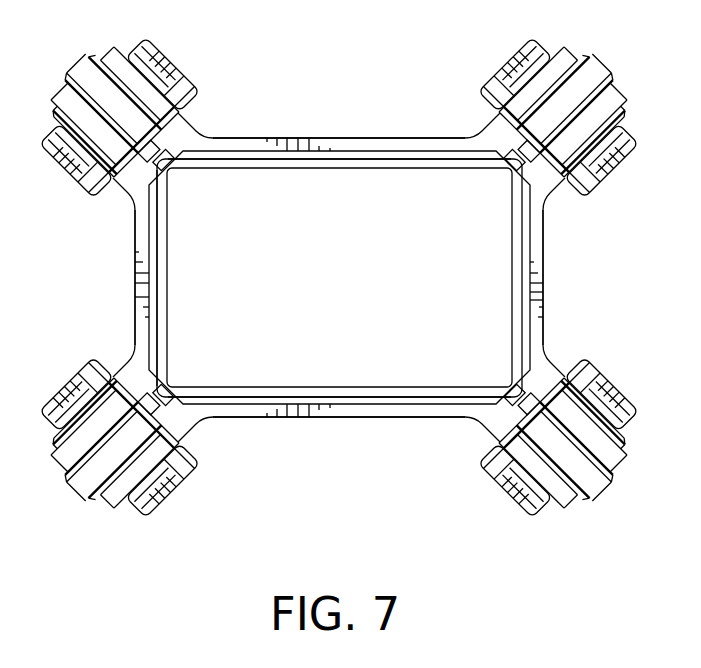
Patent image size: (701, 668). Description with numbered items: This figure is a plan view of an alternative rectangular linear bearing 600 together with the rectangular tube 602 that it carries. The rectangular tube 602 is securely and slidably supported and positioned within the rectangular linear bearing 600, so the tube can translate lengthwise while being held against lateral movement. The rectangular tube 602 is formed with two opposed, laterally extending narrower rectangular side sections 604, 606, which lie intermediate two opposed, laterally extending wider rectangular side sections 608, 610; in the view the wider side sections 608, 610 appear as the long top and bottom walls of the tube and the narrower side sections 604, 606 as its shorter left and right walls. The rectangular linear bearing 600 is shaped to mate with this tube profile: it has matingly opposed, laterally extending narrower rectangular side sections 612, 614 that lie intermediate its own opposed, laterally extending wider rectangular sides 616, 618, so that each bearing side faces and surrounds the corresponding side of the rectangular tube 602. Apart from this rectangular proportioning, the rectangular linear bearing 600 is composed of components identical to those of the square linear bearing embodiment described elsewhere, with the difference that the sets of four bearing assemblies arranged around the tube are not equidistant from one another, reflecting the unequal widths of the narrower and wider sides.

The rectangular linear bearing 600 is at (543, 327).
The rectangular tube 602 is at (522, 296).
The narrower rectangular side section 604 is at (525, 221).
The narrower rectangular side section 606 is at (157, 227).
The wider rectangular side section 608 is at (387, 398).
The wider rectangular side section 610 is at (387, 158).
The narrower rectangular side section 612 is at (543, 252).
The narrower rectangular side section 614 is at (135, 281).
The wider rectangular side 616 is at (233, 140).
The wider rectangular side 618 is at (233, 415).